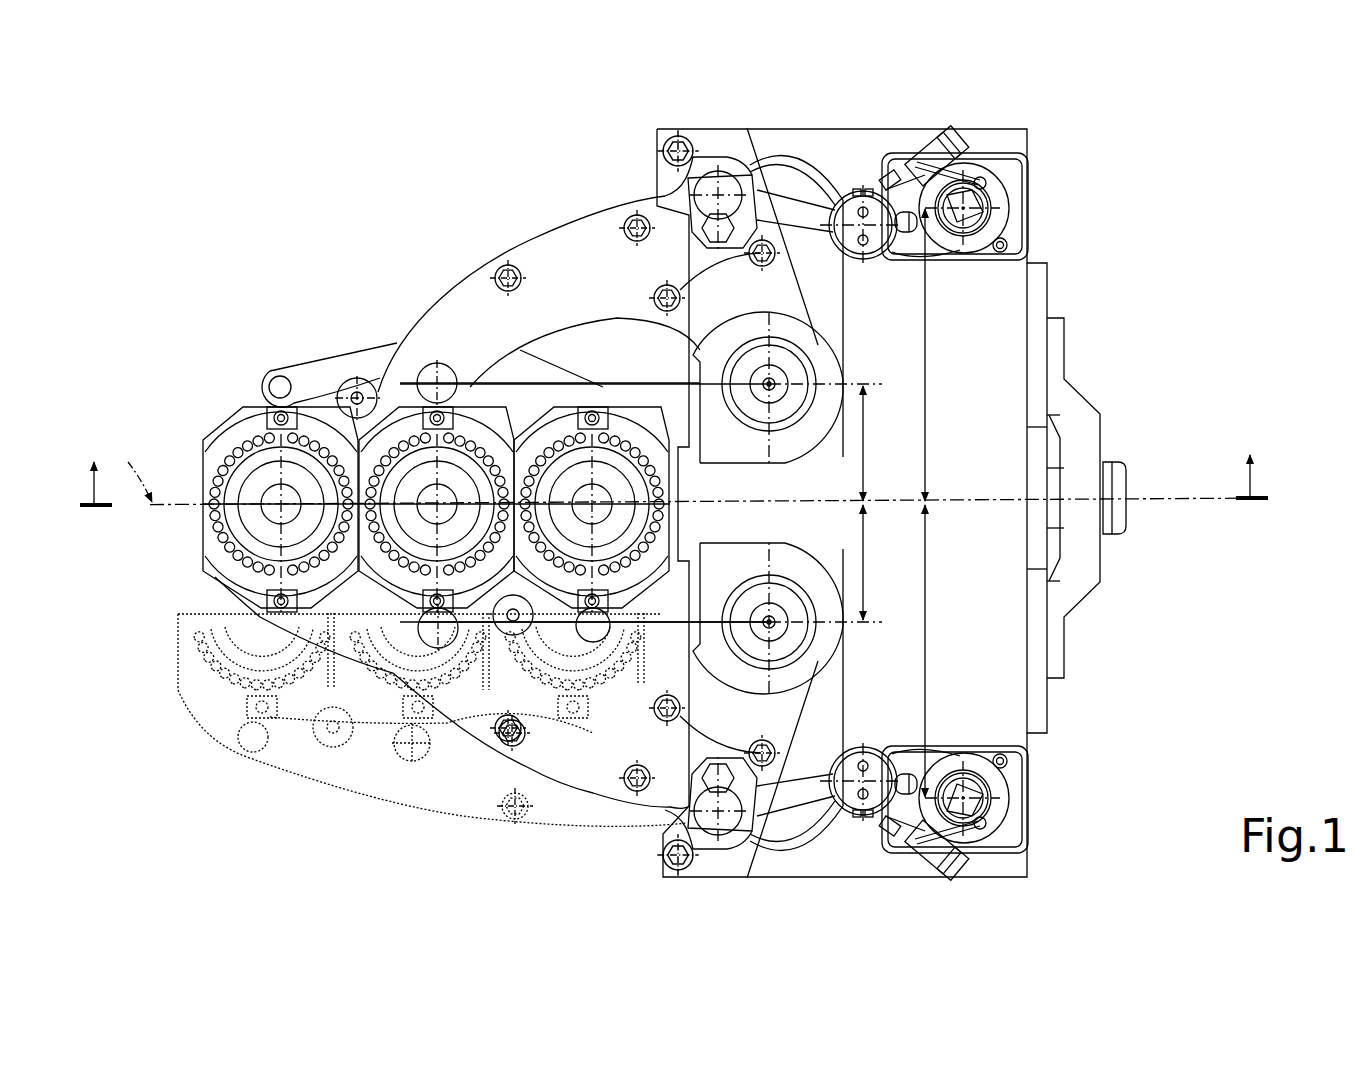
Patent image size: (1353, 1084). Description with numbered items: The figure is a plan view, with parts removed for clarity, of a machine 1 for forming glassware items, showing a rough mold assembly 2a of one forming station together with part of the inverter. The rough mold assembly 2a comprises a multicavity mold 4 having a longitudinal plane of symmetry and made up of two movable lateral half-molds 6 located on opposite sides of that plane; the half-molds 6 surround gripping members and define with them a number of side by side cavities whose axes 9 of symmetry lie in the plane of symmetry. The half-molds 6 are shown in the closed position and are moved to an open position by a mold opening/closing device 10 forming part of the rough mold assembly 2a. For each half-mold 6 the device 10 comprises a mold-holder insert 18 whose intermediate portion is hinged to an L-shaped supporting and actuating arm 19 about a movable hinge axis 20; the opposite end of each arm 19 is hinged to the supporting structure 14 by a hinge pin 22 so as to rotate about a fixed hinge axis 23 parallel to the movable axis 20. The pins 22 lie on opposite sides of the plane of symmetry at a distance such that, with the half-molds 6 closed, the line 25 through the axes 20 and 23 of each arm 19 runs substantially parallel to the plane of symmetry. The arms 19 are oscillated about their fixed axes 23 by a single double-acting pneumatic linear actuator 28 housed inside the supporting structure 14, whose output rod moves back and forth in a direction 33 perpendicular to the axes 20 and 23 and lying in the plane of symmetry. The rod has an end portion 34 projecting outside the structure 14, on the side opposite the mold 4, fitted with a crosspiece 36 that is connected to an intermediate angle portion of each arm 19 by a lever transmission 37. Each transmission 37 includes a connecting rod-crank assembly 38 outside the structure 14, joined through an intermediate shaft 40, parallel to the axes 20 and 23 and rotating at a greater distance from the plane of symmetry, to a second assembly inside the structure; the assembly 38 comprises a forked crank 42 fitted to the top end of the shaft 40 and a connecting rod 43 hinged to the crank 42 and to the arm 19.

The machine for forming glassware items 1 is at (1140, 176).
The rough mold assembly 2a is at (580, 198).
The multicavity mold 4 is at (191, 478).
The half-molds 6 is at (235, 432).
The axes of symmetry 9 is at (262, 512).
The mold opening/closing device 10 is at (1060, 741).
The supporting structure 14 is at (1000, 294).
The mold-holder insert 18 is at (311, 361).
The supporting and actuating arm 19 is at (524, 234).
The movable hinge axis 20 is at (434, 380).
The hinge pin 22 is at (782, 370).
The fixed hinge axis 23 is at (777, 383).
The line intersecting hinge axes 25 is at (507, 381).
The linear actuator 28 is at (1137, 457).
The direction 33 is at (1192, 500).
The end portion 34 is at (1055, 510).
The crosspiece 36 is at (1082, 420).
The lever transmission 37 is at (836, 160).
The connecting rod-crank assembly 38 is at (886, 270).
The intermediate shaft 40 is at (990, 216).
The forked crank 42 is at (900, 190).
The connecting rod 43 is at (757, 176).